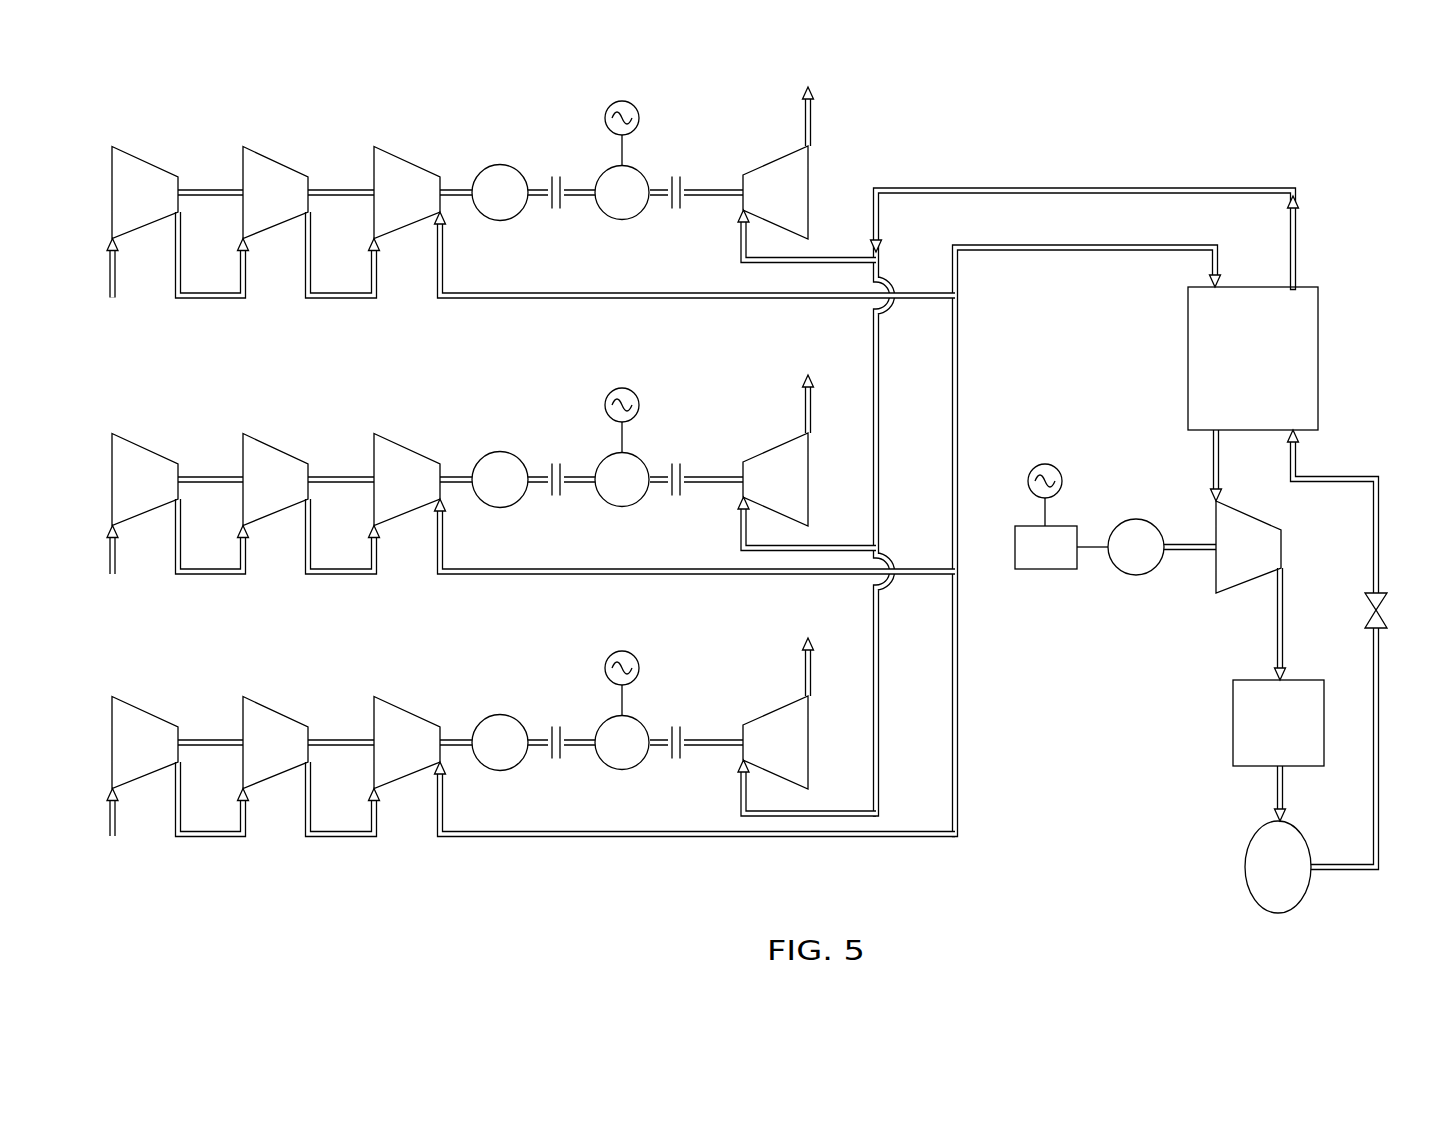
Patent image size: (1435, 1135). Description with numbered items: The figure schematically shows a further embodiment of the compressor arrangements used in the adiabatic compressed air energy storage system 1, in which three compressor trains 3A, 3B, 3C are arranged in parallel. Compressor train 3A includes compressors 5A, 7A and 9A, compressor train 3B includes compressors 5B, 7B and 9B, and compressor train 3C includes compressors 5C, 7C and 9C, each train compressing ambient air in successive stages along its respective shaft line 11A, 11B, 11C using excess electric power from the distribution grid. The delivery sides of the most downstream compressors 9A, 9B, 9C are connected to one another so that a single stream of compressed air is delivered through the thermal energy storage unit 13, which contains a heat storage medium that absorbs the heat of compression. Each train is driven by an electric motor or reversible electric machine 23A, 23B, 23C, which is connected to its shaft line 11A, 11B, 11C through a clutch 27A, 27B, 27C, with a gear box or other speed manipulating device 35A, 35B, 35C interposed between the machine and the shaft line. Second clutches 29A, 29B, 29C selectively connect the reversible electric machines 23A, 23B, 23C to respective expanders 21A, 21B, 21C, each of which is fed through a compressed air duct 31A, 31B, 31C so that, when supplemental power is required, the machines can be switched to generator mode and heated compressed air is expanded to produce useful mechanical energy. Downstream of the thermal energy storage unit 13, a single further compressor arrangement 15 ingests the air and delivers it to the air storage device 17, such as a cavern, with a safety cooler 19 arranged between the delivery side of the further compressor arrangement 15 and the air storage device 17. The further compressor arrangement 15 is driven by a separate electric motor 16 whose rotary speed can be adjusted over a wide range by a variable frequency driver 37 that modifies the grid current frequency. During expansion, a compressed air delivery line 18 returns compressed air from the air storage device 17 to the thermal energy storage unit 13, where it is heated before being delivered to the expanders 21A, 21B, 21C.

The ACAES system 1 is at (1209, 164).
The compressor train 3A is at (687, 88).
The compressor train 3B is at (687, 373).
The compressor train 3C is at (688, 637).
The compressor 5A is at (146, 152).
The compressor 5B is at (152, 452).
The compressor 5C is at (146, 714).
The compressor 7A is at (277, 152).
The compressor 7B is at (295, 456).
The compressor 7C is at (294, 716).
The compressor 9A is at (408, 152).
The compressor 9B is at (427, 456).
The compressor 9C is at (428, 716).
The shaft line 11A is at (198, 186).
The shaft line 11B is at (206, 474).
The shaft line 11C is at (215, 735).
The thermal energy storage unit 13 is at (1188, 355).
The further compressor arrangement 15 is at (1249, 510).
The electric motor 16 is at (1139, 576).
The air storage device 17 is at (1245, 865).
The compressed air delivery line 18 is at (1380, 774).
The safety cooler 19 is at (1233, 730).
The expander 21A is at (749, 168).
The expander 21B is at (749, 455).
The expander 21C is at (751, 718).
The reversible electric machine 23A is at (627, 222).
The reversible electric machine 23B is at (627, 509).
The reversible electric machine 23C is at (627, 772).
The clutch 27A is at (541, 176).
The clutch 27B is at (541, 463).
The clutch 27C is at (541, 726).
The second clutch 29A is at (682, 176).
The second clutch 29B is at (682, 463).
The second clutch 29C is at (682, 726).
The compressed air duct 31A is at (833, 255).
The compressed air duct 31B is at (833, 544).
The compressed air duct 31C is at (835, 809).
The gear box 35A is at (503, 222).
The gear box 35B is at (503, 509).
The gear box 35C is at (503, 772).
The variable frequency driver 37 is at (1047, 570).